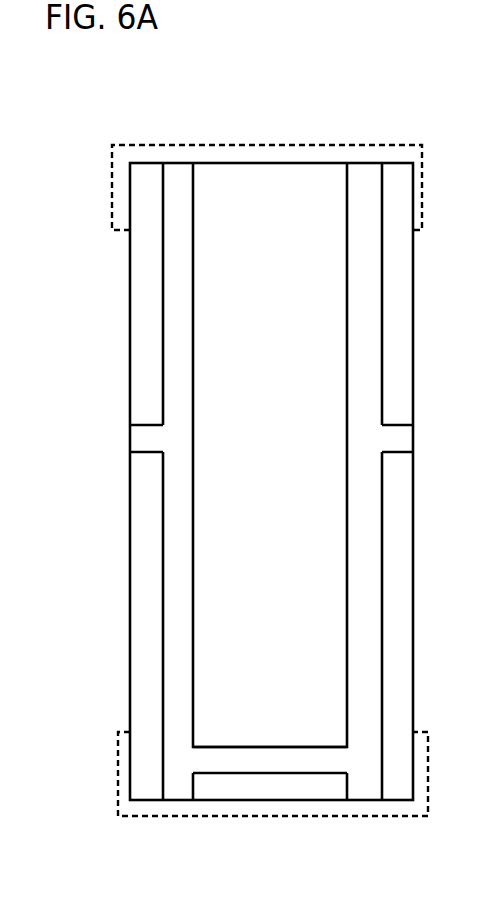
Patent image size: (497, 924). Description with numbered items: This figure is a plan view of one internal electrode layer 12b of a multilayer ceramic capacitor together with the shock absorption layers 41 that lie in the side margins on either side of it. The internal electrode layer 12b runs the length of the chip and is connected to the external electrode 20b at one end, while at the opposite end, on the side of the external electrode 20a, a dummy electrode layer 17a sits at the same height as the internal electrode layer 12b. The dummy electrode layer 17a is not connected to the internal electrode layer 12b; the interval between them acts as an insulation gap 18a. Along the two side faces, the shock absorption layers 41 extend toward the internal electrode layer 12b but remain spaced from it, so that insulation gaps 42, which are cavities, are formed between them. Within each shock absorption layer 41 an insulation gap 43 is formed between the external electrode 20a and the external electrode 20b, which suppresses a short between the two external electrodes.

The internal electrode layer 12b is at (243, 176).
The dummy electrode layer 17a is at (255, 788).
The insulation gap 18a is at (318, 760).
The external electrode 20a is at (419, 816).
The external electrode 20b is at (330, 145).
The shock absorption layer 41 is at (141, 342).
The insulation gap 42 is at (178, 645).
The insulation gap 43 is at (145, 441).